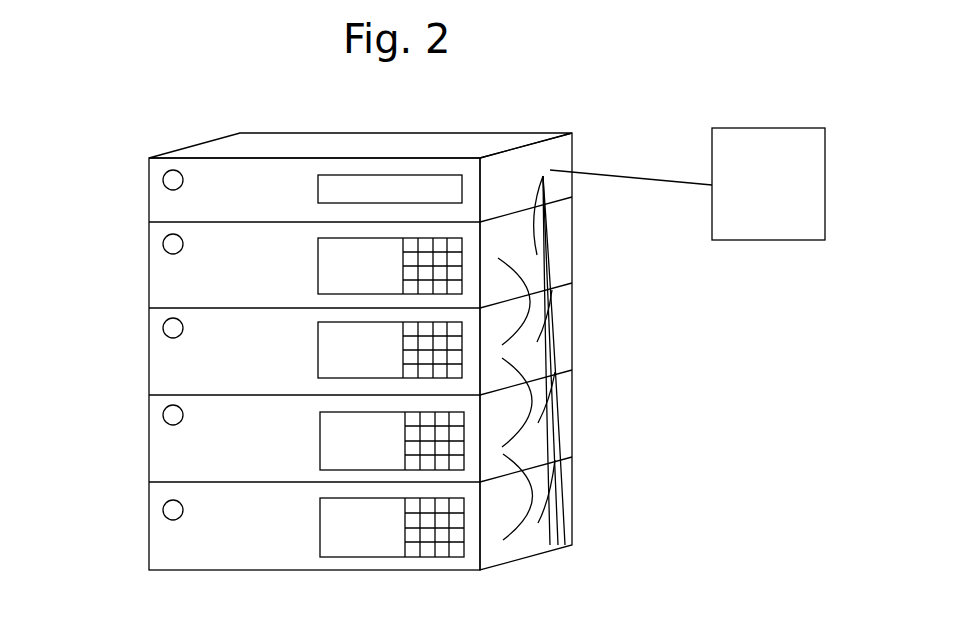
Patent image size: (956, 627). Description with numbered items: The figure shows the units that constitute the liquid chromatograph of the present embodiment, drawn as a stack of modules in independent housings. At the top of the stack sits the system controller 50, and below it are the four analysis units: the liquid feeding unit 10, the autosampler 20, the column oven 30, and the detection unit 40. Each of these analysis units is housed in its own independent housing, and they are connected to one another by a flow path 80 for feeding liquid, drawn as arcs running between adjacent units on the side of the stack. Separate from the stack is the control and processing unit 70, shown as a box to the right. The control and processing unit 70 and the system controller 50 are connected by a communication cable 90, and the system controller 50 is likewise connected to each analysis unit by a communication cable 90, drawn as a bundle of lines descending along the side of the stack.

The system controller 50 is at (149, 178).
The liquid feeding unit 10 is at (149, 265).
The autosampler 20 is at (149, 350).
The column oven 30 is at (149, 436).
The detection unit 40 is at (149, 514).
The control and processing unit 70 is at (788, 240).
The flow path 80 is at (528, 306).
The communication cable 90 is at (555, 207).